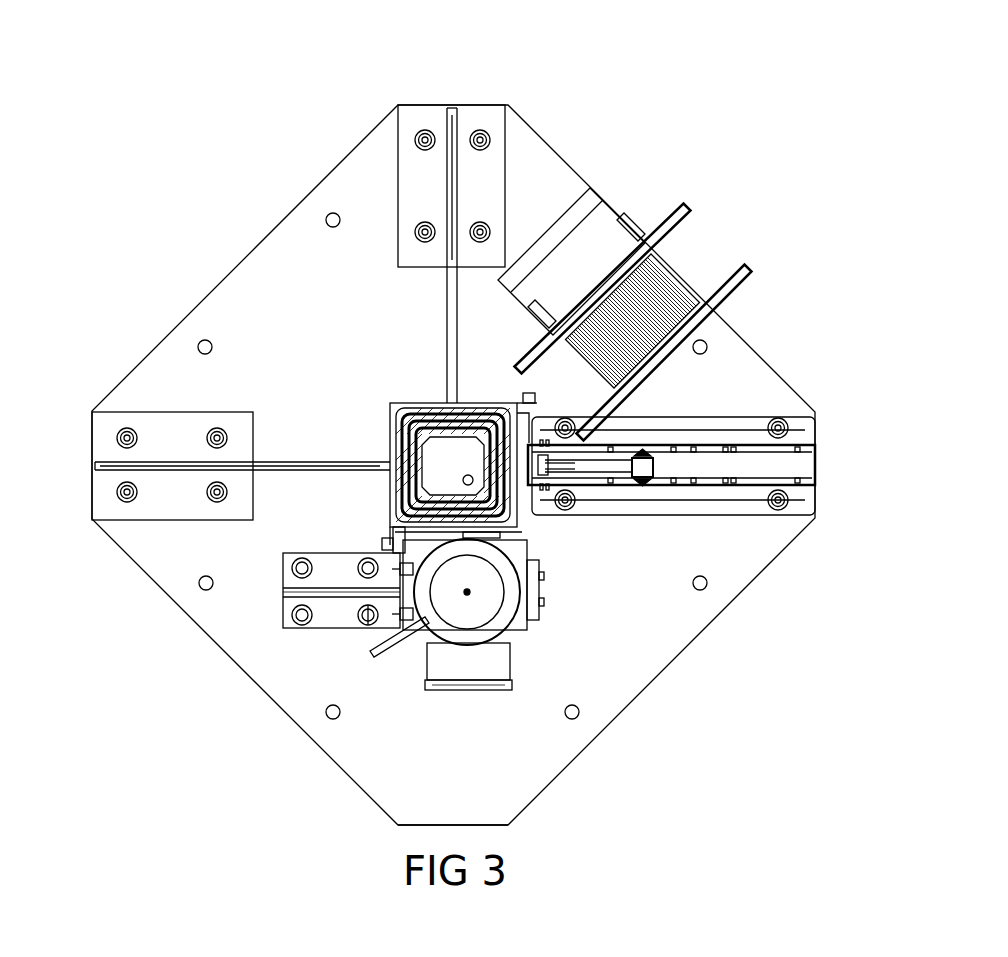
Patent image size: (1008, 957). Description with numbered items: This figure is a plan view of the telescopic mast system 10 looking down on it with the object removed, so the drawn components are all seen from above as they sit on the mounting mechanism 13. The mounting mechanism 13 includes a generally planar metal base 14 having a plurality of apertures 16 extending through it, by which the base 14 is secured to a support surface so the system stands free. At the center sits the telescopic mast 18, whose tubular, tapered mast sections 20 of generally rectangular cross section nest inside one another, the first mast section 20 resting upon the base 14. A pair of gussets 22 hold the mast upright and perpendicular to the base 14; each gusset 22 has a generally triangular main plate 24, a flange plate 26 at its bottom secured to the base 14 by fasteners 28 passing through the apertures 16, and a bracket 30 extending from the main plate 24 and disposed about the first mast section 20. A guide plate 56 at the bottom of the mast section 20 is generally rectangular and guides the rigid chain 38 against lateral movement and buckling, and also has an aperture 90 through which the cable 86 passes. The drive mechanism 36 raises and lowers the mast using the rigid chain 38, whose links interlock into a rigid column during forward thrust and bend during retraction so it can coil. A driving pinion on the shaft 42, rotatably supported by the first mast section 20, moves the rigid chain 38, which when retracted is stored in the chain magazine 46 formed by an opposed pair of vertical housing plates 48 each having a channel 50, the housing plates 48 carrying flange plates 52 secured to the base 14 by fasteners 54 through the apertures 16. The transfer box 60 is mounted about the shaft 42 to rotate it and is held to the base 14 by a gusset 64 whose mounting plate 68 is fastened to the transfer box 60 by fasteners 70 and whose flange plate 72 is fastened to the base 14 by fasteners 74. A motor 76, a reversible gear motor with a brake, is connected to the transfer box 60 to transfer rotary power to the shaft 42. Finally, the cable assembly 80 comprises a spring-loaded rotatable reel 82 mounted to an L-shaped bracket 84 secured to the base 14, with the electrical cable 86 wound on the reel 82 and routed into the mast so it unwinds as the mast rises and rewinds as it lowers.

The telescopic mast system 10 is at (733, 118).
The mounting mechanism 13 is at (692, 648).
The base 14 is at (617, 685).
The apertures 16 is at (703, 594).
The telescopic mast 18 is at (388, 400).
The telescopic mast sections 20 is at (431, 415).
The gussets 22 is at (450, 130).
The main plate 24 is at (452, 135).
The flange plate 26 is at (492, 160).
The fasteners 28 is at (480, 140).
The bracket 30 is at (395, 540).
The drive mechanism 36 is at (425, 648).
The rigid chain 38 is at (640, 478).
The shaft 42 is at (500, 535).
The chain magazine 46 is at (822, 438).
The housing plates 48 is at (690, 455).
The channel 50 is at (776, 470).
The flange plate 52 is at (733, 425).
The fasteners 54 is at (778, 428).
The guide plates 56 is at (455, 455).
The transfer box 60 is at (327, 595).
The gusset 64 is at (287, 592).
The mounting plate 68 is at (400, 640).
The fasteners 70 is at (368, 625).
The flange plate 72 is at (340, 568).
The fasteners 74 is at (296, 568).
The motor 76 is at (480, 615).
The cable assembly 80 is at (700, 195).
The rotatable reel 82 is at (740, 285).
The L-shaped bracket 84 is at (600, 245).
The cable 86 is at (660, 300).
The aperture 90 is at (468, 478).